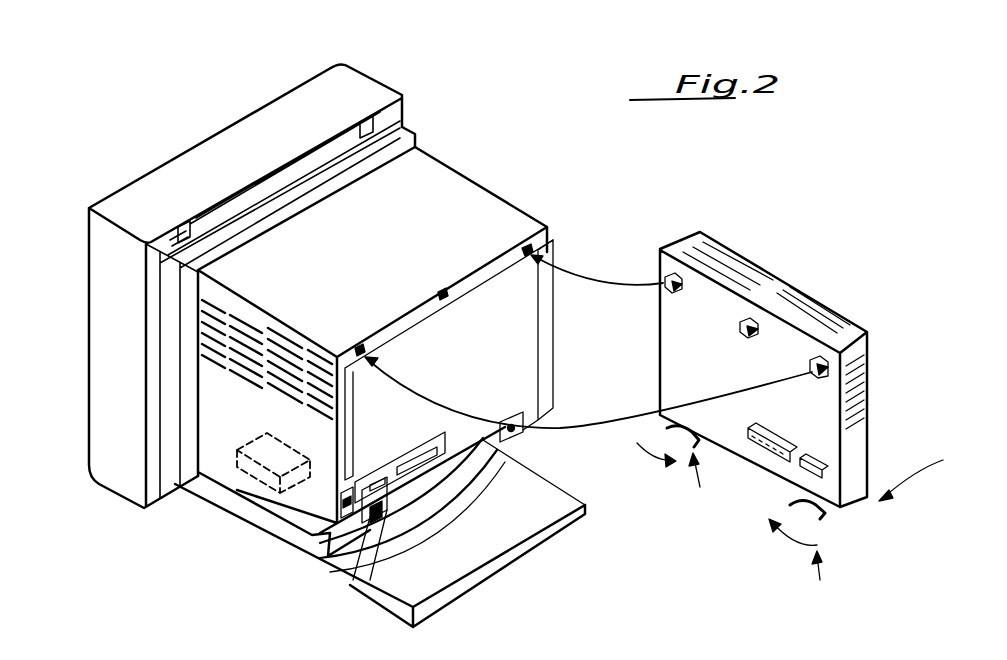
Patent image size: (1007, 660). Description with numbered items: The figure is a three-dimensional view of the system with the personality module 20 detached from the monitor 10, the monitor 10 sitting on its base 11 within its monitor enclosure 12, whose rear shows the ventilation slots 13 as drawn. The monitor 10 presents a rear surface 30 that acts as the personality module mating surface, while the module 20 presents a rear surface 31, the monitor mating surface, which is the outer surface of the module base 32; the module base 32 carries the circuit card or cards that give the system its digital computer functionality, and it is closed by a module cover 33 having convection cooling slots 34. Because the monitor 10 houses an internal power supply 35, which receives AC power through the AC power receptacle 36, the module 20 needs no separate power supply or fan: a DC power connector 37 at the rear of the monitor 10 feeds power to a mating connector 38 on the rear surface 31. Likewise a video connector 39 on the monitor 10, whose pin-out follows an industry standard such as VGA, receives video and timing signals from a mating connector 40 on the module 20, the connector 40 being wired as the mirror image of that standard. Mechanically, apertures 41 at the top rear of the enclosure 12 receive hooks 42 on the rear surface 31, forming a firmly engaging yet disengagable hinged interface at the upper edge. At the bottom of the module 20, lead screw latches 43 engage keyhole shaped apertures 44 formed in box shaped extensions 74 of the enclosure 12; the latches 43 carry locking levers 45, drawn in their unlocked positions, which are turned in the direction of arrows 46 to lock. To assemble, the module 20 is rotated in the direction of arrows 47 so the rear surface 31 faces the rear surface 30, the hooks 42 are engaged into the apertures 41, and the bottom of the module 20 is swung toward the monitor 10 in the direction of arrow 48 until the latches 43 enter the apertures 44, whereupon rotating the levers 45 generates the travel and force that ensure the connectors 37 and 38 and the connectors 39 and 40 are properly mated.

The monitor 10 is at (485, 152).
The base 11 is at (275, 540).
The monitor enclosure 12 is at (507, 205).
The ventilation slots 13 is at (247, 322).
The personality module 20 is at (748, 243).
The rear surface 30 is at (522, 332).
The rear surface 31 is at (832, 440).
The module base 32 is at (660, 343).
The module cover 33 is at (862, 328).
The convection cooling slots 34 is at (810, 305).
The internal power supply 35 is at (247, 477).
The AC power receptacle 36 is at (333, 550).
The DC power connector 37 is at (427, 457).
The mating connector 38 is at (760, 443).
The video connector 39 is at (387, 510).
The mating connector 40 is at (843, 500).
The apertures 41 is at (357, 350).
The hooks 42 is at (666, 276).
The lead screw latches 43 is at (759, 532).
The keyhole shaped apertures 44 is at (512, 432).
The locking levers 45 is at (683, 430).
The arrows 46 is at (723, 516).
The arrows 47 is at (595, 277).
The arrow 48 is at (917, 480).
The box shaped extension 74 is at (345, 560).